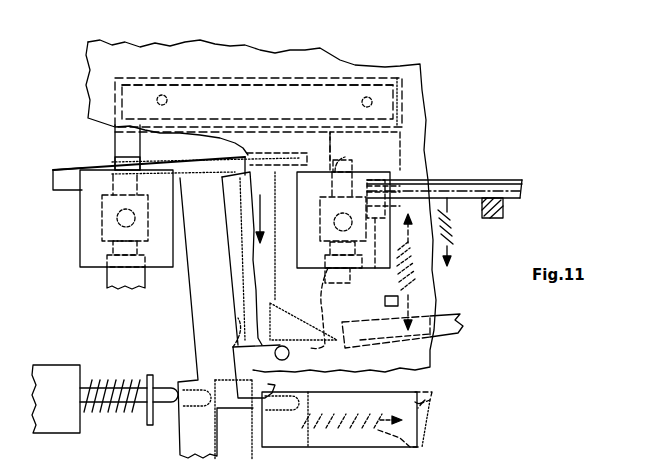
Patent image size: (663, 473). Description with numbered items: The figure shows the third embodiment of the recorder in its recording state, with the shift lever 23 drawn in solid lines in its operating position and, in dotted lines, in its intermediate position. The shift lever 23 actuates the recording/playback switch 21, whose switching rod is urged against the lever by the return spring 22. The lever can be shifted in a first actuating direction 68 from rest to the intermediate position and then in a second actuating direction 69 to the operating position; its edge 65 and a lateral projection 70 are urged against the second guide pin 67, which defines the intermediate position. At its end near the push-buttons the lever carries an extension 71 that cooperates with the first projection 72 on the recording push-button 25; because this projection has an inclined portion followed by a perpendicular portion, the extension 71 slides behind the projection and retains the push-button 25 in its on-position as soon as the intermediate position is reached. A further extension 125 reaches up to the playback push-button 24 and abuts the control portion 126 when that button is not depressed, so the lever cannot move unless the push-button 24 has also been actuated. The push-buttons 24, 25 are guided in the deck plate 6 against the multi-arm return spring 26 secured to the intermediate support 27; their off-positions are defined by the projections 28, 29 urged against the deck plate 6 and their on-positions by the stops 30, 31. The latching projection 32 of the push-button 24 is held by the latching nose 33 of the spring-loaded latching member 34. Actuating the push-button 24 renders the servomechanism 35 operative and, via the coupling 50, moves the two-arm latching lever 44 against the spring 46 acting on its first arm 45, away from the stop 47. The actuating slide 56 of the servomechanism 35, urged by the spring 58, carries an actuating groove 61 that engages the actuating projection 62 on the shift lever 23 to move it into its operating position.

The deck plate 6 is at (120, 45).
The return spring 26 is at (188, 70).
The intermediate support 27 is at (283, 92).
The extension 71 is at (60, 172).
The first projection 72 is at (122, 157).
The further extension 125 is at (246, 158).
The control portion 126 is at (360, 143).
The latching nose 33 is at (383, 180).
The push-button 24 is at (395, 212).
The latching member 34 is at (492, 182).
The push-button 25 is at (75, 209).
The projection 29 is at (115, 250).
The stop 31 is at (110, 278).
The first actuating direction 68 is at (258, 222).
The second actuating direction 69 is at (211, 318).
The projection 28 is at (343, 238).
The latching projection 32 is at (356, 243).
The stop 47 is at (391, 296).
The spring 46 is at (418, 292).
The lateral projection 70 is at (282, 328).
The stop 30 is at (316, 308).
The coupling 50 is at (357, 300).
The latching lever 44 is at (468, 320).
The first arm 45 is at (380, 340).
The edge 65 is at (236, 346).
The second guide pin 67 is at (289, 354).
The actuating projection 62 is at (250, 390).
The recording/playback switch 21 is at (57, 360).
The return spring 22 is at (128, 382).
The shift lever 23 is at (190, 361).
The servomechanism 35 is at (437, 382).
The actuating groove 61 is at (300, 418).
The actuating slide 56 is at (425, 404).
The spring 58 is at (415, 440).